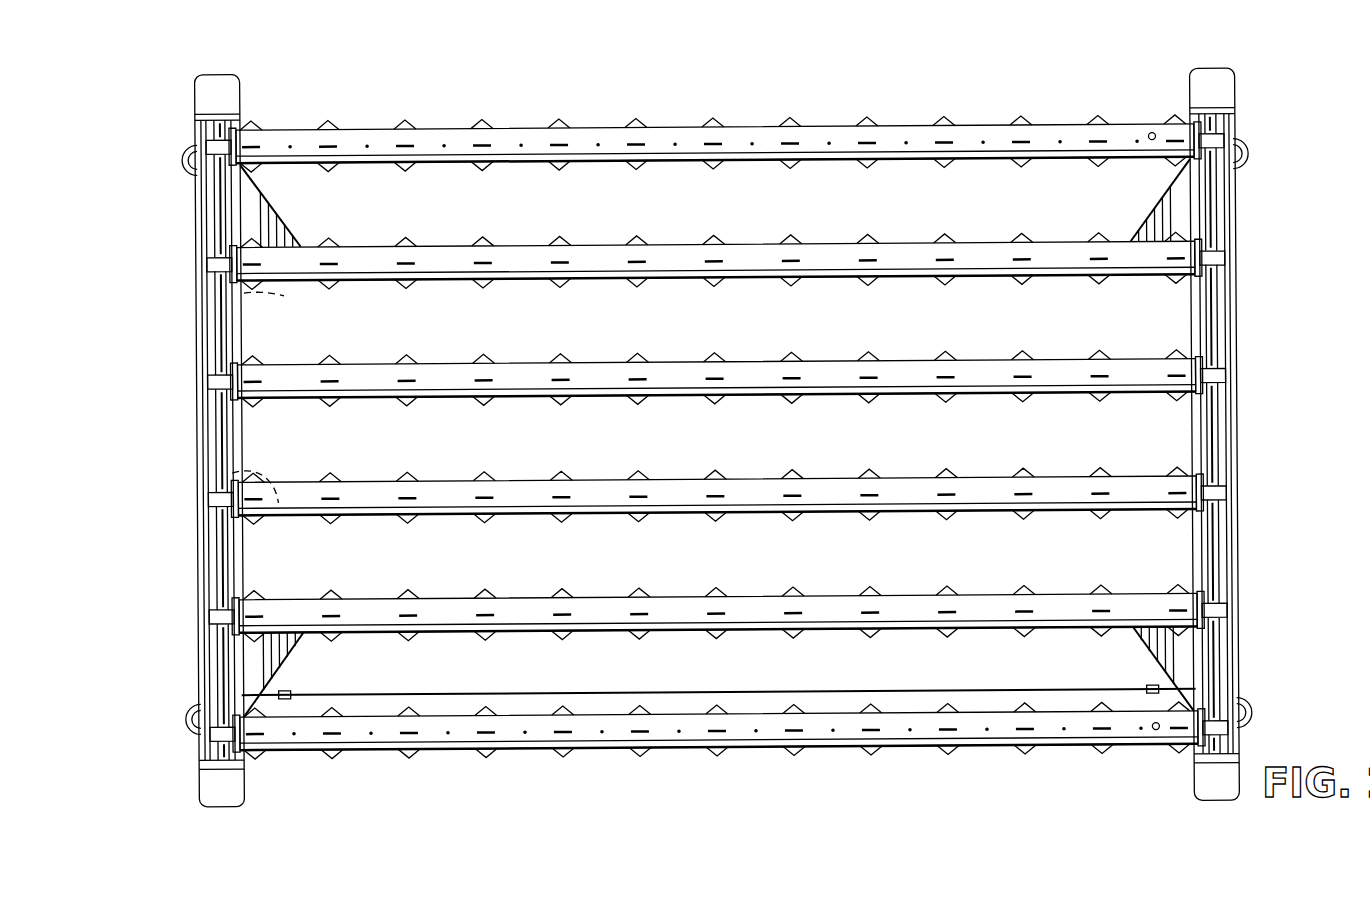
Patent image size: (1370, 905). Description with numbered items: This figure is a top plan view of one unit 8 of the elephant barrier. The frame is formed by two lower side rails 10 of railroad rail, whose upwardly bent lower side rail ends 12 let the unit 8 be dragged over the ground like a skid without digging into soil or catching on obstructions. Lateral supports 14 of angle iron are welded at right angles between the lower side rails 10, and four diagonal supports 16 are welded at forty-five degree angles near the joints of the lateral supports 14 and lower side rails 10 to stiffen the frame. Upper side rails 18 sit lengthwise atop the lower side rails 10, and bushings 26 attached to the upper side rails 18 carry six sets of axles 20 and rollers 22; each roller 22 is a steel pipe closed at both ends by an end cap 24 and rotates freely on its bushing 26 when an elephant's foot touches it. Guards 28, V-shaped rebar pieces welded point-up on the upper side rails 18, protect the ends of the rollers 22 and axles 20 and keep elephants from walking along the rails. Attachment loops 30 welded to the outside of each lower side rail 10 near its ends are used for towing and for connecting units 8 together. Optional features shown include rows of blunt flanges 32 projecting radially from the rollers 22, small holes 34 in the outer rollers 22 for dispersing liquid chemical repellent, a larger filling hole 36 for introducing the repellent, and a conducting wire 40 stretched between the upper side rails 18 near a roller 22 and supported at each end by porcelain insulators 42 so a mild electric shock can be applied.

The unit 8 is at (170, 42).
The lower side rail 10 is at (190, 241).
The lower side rail end 12 is at (208, 92).
The lateral support 14 is at (245, 290).
The diagonal support 16 is at (235, 258).
The upper side rail 18 is at (215, 364).
The axle 20 is at (220, 386).
The roller 22 is at (583, 128).
The end cap 24 is at (232, 500).
The bushing 26 is at (232, 470).
The guard 28 is at (218, 198).
The attachment loop 30 is at (180, 148).
The flange 32 is at (638, 357).
The hole 34 is at (1062, 135).
The filling hole 36 is at (1150, 136).
The conducting wire 40 is at (612, 697).
The porcelain insulator 42 is at (276, 690).